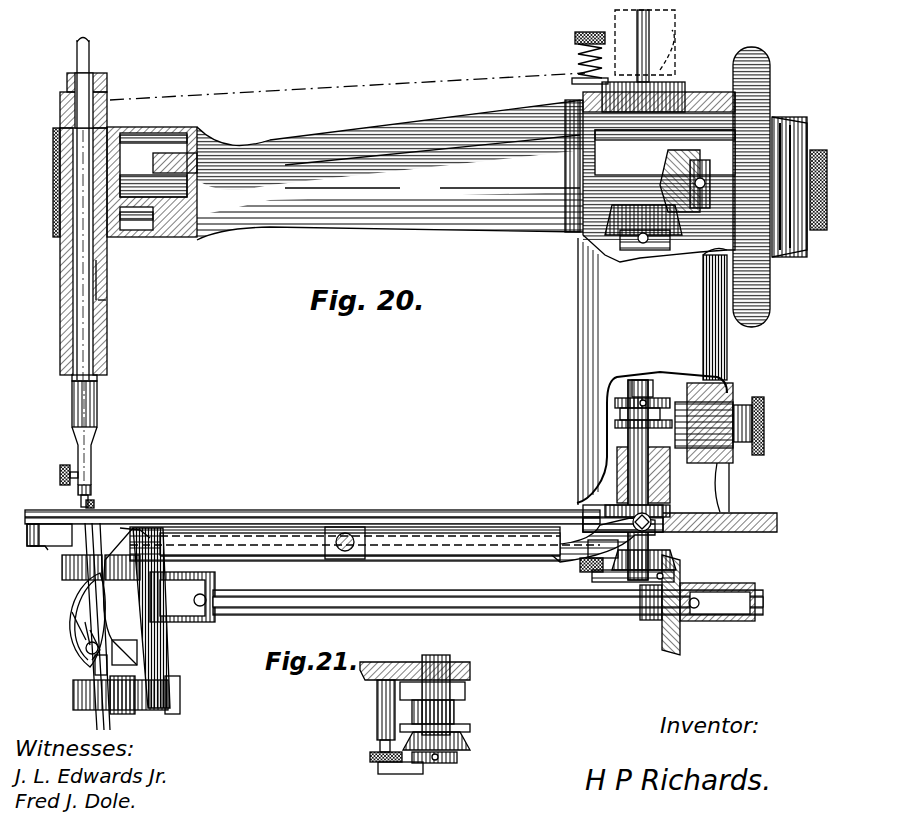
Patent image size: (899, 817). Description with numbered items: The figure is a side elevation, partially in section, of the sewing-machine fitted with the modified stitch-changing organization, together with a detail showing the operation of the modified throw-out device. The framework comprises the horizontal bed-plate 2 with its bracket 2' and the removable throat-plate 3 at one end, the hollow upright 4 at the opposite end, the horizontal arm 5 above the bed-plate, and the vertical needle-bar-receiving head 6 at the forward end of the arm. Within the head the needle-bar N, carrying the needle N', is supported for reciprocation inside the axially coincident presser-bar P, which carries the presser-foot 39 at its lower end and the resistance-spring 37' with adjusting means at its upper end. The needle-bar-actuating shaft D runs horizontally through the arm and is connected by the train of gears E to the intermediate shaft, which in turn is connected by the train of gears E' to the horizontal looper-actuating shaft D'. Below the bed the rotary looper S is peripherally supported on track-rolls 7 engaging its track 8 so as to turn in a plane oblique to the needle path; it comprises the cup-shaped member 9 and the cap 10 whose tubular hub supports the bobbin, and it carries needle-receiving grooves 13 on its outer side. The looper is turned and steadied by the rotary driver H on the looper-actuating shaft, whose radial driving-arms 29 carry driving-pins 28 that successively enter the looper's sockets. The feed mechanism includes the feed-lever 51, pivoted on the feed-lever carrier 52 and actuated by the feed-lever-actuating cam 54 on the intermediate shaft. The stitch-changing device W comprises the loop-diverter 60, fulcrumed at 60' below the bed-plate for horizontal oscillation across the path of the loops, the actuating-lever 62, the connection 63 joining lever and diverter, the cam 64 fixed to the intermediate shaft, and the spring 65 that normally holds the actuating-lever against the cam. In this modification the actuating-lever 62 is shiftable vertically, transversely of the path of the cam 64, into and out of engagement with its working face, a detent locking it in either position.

In FIG. 20, the horizontal bed-plate 2 is at (365, 525).
In FIG. 20, the bracket 2' is at (133, 701).
In FIG. 20, the removable throat-plate 3 is at (168, 512).
In FIG. 20, the hollow upright 4 is at (653, 375).
In FIG. 20, the horizontal arm 5 is at (390, 170).
In FIG. 20, the needle-bar-receiving head 6 is at (108, 305).
In FIG. 20, the track-rolls 7 is at (88, 585).
In FIG. 20, the track 8 is at (95, 640).
In FIG. 20, the cup-shaped member 9 is at (85, 622).
In FIG. 20, the cap 10 is at (72, 612).
In FIG. 20, the needle-receiving grooves 13 is at (82, 655).
In FIG. 20, the driving-pins 28 is at (138, 528).
In FIG. 20, the driving-arms 29 is at (160, 632).
In FIG. 20, the resistance-spring 37' is at (69, 83).
In FIG. 20, the presser-foot 39 is at (92, 505).
In FIG. 20, the feed-lever 51 is at (285, 556).
In FIG. 20, the feed-lever carrier 52 is at (372, 530).
In FIG. 20, the feed-lever-actuating cam 54 is at (668, 520).
In FIG. 21, the feed-lever-actuating cam 54 is at (458, 705).
In FIG. 20, the loop-diverter 60 is at (312, 504).
In FIG. 20, the fulcrum of loop-diverter 60' is at (29, 557).
In FIG. 20, the actuating-lever 62 is at (612, 582).
In FIG. 21, the actuating-lever 62 is at (400, 774).
In FIG. 20, the connection 63 is at (62, 565).
In FIG. 20, the cam 64 is at (638, 580).
In FIG. 21, the cam 64 is at (445, 762).
In FIG. 20, the spring 65 is at (555, 535).
In FIG. 20, the needle-bar-actuating shaft D is at (132, 251).
In FIG. 20, the looper-actuating shaft D' is at (488, 591).
In FIG. 20, the train of gears E is at (659, 177).
In FIG. 20, the train of gears E' is at (697, 608).
In FIG. 20, the rotary driver H is at (182, 597).
In FIG. 20, the needle-bar N is at (92, 433).
In FIG. 20, the needle N' is at (88, 483).
In FIG. 20, the presser-bar P is at (80, 360).
In FIG. 20, the rotary looper S is at (71, 620).
In FIG. 20, the stitch-changing device W is at (49, 535).